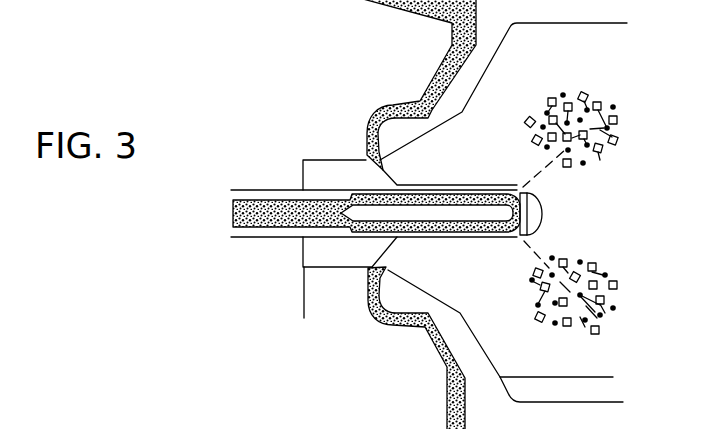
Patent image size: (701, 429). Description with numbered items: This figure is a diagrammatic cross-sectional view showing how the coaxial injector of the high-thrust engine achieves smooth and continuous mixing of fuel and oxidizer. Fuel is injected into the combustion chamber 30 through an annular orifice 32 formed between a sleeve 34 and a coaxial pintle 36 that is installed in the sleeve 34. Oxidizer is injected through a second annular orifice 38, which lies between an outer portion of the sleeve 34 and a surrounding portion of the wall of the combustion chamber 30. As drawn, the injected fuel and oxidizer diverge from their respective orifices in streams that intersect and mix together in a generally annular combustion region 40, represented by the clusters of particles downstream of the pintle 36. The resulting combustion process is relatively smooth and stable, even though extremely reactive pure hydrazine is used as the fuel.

The combustion chamber 30 is at (513, 28).
The annular orifice 32 is at (520, 244).
The sleeve 34 is at (463, 167).
The coaxial pintle 36 is at (543, 220).
The annular orifice 38 is at (391, 171).
The annular combustion region 40 is at (603, 90).